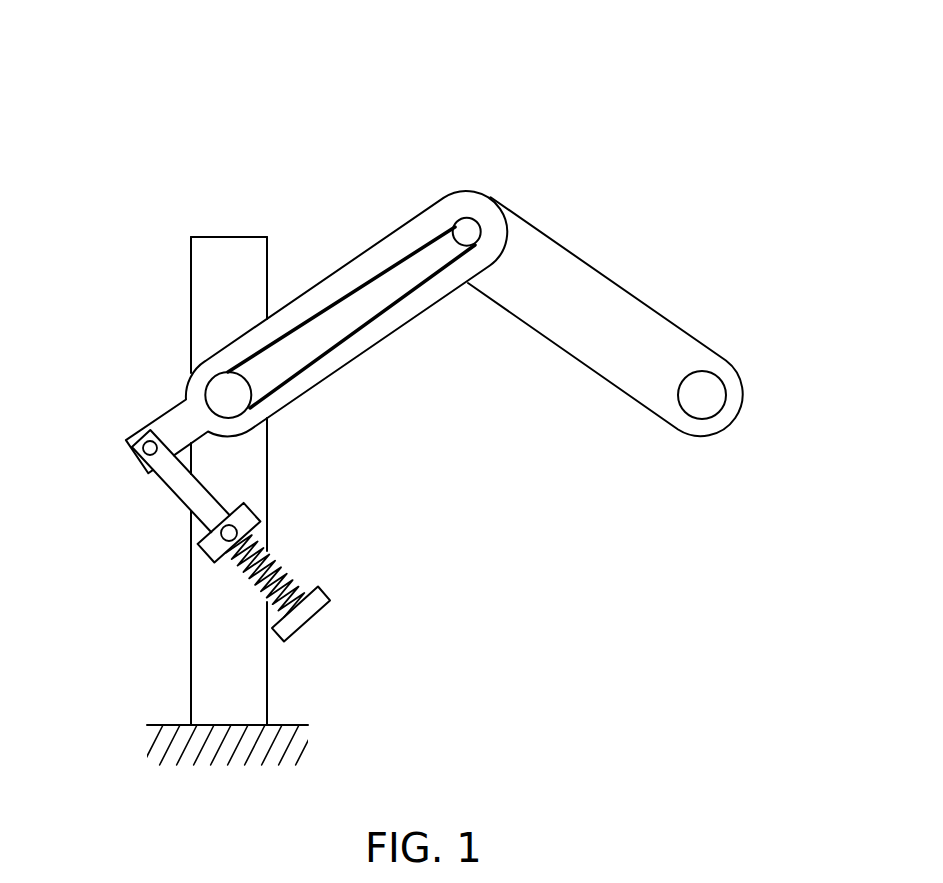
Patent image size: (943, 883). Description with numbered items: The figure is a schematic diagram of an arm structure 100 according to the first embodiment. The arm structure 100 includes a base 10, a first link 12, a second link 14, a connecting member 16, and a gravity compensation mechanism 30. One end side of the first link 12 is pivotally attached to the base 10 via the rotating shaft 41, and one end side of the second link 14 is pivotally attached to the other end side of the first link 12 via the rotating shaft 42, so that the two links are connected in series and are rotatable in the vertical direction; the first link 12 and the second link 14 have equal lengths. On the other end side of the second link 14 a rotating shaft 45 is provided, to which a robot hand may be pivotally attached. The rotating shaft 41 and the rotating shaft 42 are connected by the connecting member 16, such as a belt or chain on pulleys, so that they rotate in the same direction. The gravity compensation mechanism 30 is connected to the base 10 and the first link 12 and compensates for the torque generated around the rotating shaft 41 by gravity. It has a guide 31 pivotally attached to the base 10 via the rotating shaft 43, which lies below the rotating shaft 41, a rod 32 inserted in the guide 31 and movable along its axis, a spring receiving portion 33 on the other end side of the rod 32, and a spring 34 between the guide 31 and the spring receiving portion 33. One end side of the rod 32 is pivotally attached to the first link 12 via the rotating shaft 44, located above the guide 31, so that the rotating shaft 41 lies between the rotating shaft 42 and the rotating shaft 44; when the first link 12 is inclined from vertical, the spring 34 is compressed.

The arm structure 100 is at (721, 108).
The base 10 is at (222, 247).
The first link 12 is at (372, 257).
The second link 14 is at (610, 297).
The connecting member 16 is at (377, 320).
The gravity compensation mechanism 30 is at (293, 571).
The guide 31 is at (243, 518).
The rod 32 is at (182, 488).
The spring receiving portion 33 is at (303, 615).
The spring 34 is at (290, 560).
The rotating shaft 41 is at (235, 398).
The rotating shaft 42 is at (466, 230).
The rotating shaft 43 is at (228, 533).
The rotating shaft 44 is at (147, 448).
The rotating shaft 45 is at (703, 385).